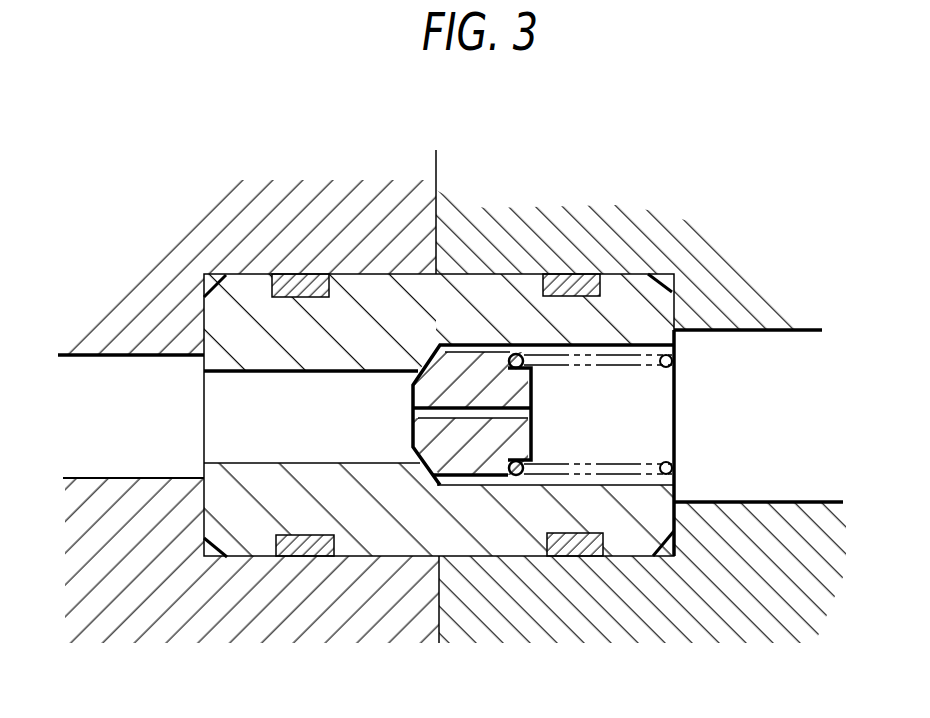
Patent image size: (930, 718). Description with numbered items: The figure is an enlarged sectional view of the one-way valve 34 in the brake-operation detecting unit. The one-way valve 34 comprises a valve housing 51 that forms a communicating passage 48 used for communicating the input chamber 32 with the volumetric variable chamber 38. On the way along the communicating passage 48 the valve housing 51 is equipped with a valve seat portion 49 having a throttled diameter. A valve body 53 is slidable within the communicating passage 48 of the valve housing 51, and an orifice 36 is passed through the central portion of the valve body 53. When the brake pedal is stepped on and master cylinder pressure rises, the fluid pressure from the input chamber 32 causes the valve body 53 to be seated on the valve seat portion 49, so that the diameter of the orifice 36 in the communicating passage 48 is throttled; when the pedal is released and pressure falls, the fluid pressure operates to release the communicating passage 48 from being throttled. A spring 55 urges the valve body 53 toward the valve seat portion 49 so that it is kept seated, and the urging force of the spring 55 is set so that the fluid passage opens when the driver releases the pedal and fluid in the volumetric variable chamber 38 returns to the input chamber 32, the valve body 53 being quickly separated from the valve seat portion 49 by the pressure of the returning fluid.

The input chamber 32 is at (798, 465).
The one-way valve 34 is at (639, 266).
The orifice 36 is at (423, 415).
The volumetric variable chamber 38 is at (85, 392).
The communicating passage 48 is at (638, 352).
The valve seat portion 49 is at (443, 350).
The valve housing 51 is at (375, 285).
The valve body 53 is at (490, 363).
The spring 55 is at (613, 460).